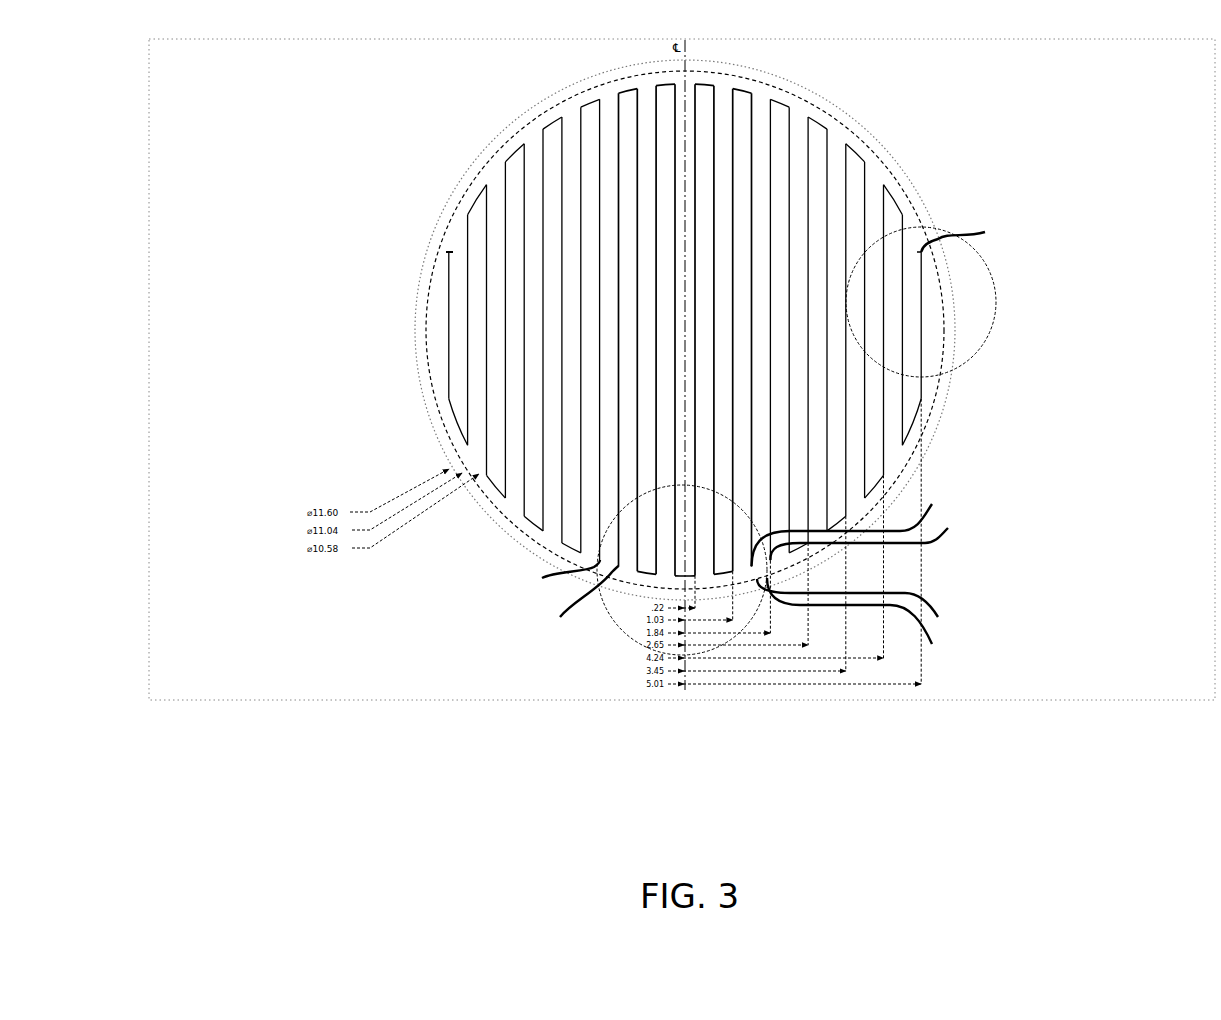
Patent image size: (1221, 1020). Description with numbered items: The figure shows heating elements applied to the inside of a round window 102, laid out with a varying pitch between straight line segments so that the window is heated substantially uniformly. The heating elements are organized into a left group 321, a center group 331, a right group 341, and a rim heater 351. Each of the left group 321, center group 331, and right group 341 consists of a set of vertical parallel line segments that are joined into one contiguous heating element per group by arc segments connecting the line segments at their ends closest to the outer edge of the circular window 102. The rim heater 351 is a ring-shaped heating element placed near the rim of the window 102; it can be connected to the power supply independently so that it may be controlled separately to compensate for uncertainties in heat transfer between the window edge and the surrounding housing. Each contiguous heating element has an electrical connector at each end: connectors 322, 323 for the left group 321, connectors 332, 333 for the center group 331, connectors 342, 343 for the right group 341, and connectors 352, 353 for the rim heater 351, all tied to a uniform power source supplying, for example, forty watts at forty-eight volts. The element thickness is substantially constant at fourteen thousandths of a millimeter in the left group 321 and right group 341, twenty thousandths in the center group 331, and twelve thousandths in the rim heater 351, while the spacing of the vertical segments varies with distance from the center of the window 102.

The round window 102 is at (497, 137).
The left group 321 is at (445, 323).
The electrical connector 322 is at (448, 252).
The electrical connector 323 is at (566, 583).
The center group 331 is at (636, 557).
The electrical connector 332 is at (578, 601).
The electrical connector 333 is at (855, 526).
The right group 341 is at (924, 306).
The electrical connector 342 is at (870, 535).
The electrical connector 343 is at (966, 232).
The rim heater 351 is at (924, 219).
The electrical connector 352 is at (866, 619).
The electrical connector 353 is at (862, 607).